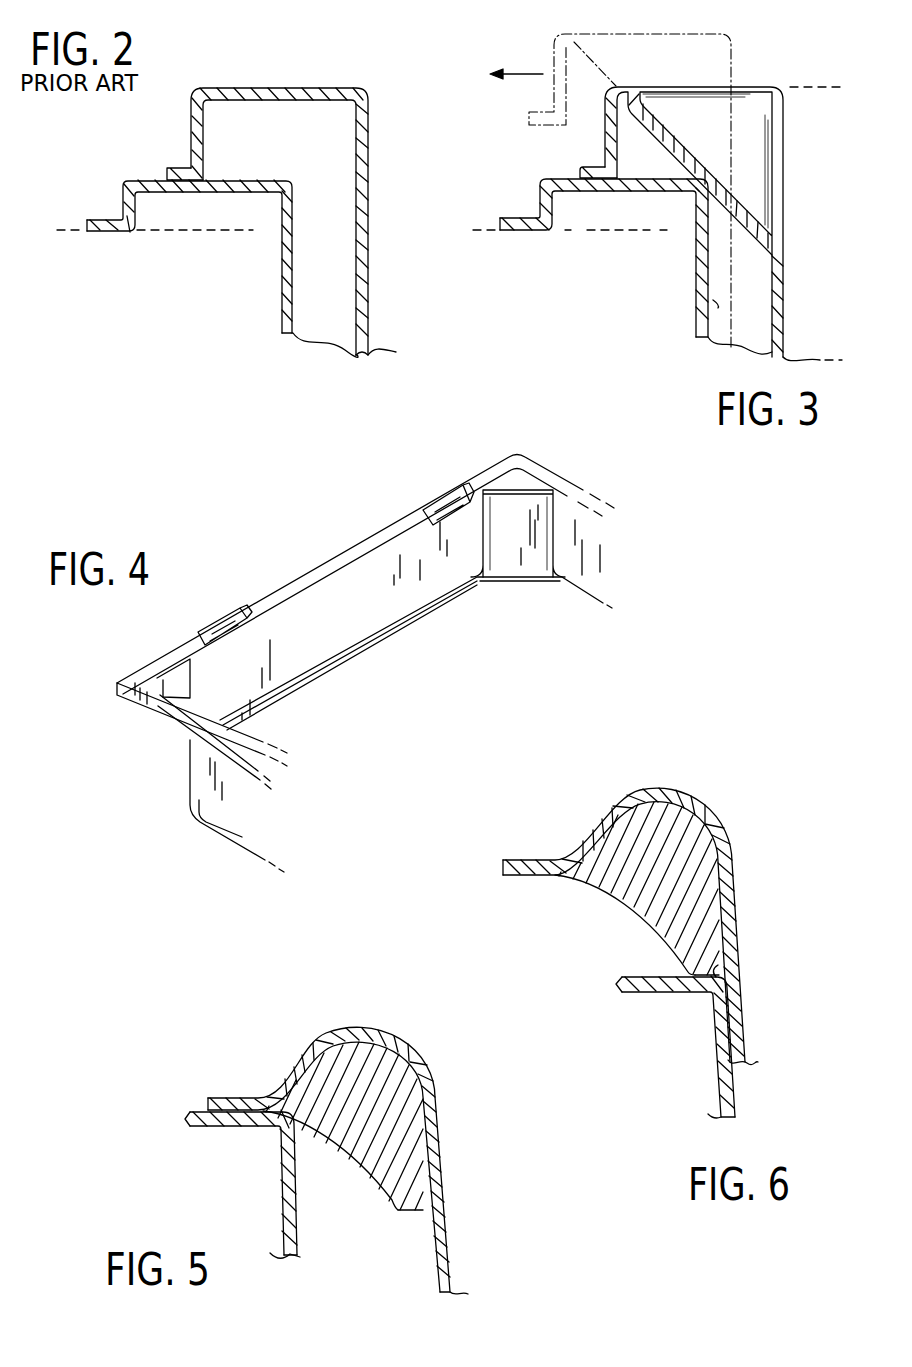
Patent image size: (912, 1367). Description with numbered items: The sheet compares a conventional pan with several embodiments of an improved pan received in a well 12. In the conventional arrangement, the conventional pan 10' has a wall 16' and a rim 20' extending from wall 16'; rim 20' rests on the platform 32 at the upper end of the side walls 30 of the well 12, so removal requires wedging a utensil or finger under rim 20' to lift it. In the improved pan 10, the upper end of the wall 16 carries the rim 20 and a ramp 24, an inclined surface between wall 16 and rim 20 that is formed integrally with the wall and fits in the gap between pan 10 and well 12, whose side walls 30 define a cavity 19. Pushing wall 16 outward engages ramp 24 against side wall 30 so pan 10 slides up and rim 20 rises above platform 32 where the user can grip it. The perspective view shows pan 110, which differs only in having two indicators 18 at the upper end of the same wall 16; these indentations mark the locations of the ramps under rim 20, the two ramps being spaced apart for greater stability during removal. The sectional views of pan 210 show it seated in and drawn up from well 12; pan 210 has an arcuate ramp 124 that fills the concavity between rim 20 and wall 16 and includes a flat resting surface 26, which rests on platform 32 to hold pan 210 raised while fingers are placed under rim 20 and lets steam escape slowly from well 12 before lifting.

In FIG. 2, the conventional pan 10' is at (279, 199).
In FIG. 2, the well 12 is at (210, 193).
In FIG. 3, the well 12 is at (697, 308).
In FIG. 5, the well 12 is at (227, 1128).
In FIG. 6, the well 12 is at (662, 992).
In FIG. 2, the wall 16' is at (385, 229).
In FIG. 2, the rim 20' is at (164, 154).
In FIG. 2, the side wall 30 is at (283, 312).
In FIG. 3, the side wall 30 is at (697, 250).
In FIG. 5, the side wall 30 is at (278, 1203).
In FIG. 6, the side wall 30 is at (713, 1063).
In FIG. 2, the platform 32 is at (123, 196).
In FIG. 3, the platform 32 is at (577, 193).
In FIG. 5, the platform 32 is at (203, 1128).
In FIG. 6, the platform 32 is at (658, 973).
In FIG. 3, the pan 10 is at (709, 178).
In FIG. 3, the wall 16 is at (801, 238).
In FIG. 4, the wall 16 is at (401, 681).
In FIG. 5, the wall 16 is at (459, 1190).
In FIG. 6, the wall 16 is at (759, 956).
In FIG. 3, the cavity 19 is at (708, 302).
In FIG. 5, the cavity 19 is at (299, 1244).
In FIG. 3, the rim 20 is at (575, 160).
In FIG. 4, the rim 20 is at (365, 622).
In FIG. 5, the rim 20 is at (239, 1084).
In FIG. 6, the rim 20 is at (536, 846).
In FIG. 3, the ramp 24 is at (747, 212).
In FIG. 4, the indicator 18 is at (218, 631).
In FIG. 4, the pan 110 is at (172, 662).
In FIG. 5, the pan 210 is at (438, 1095).
In FIG. 6, the pan 210 is at (728, 857).
In FIG. 5, the ramp 124 is at (355, 1143).
In FIG. 6, the ramp 124 is at (622, 892).
In FIG. 5, the resting surface 26 is at (413, 1215).
In FIG. 6, the resting surface 26 is at (725, 965).